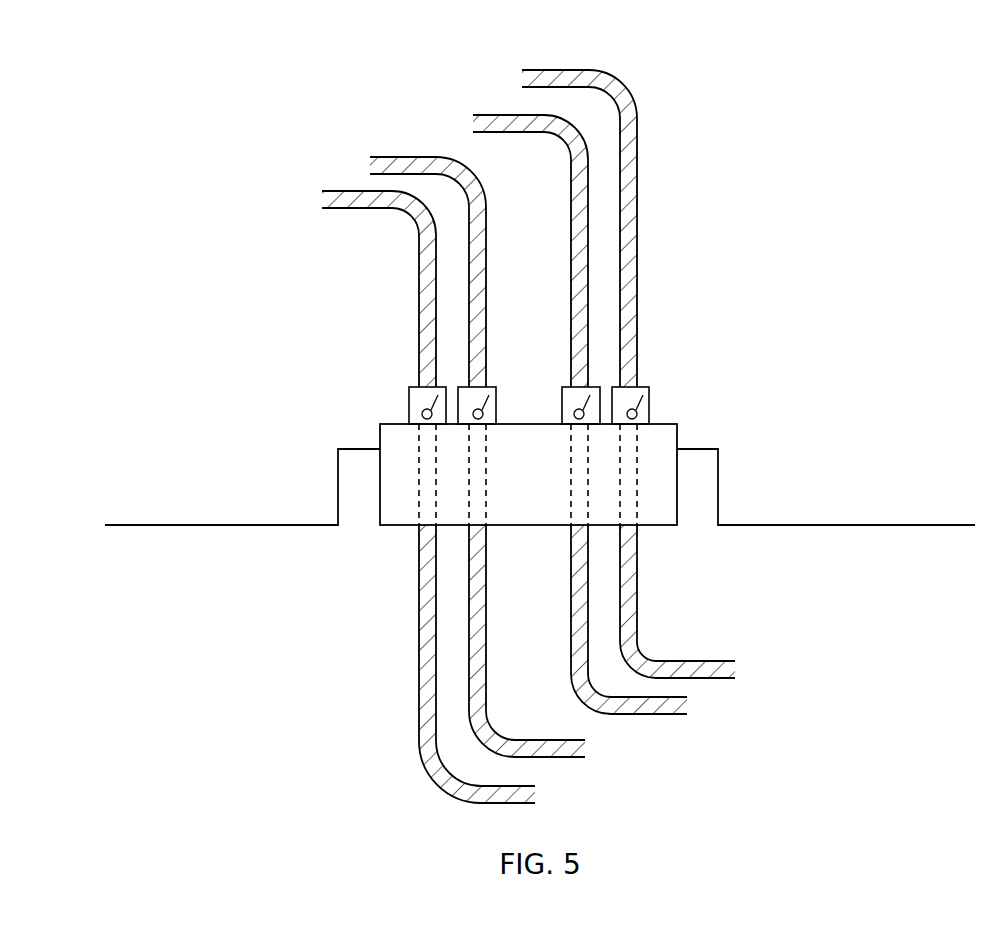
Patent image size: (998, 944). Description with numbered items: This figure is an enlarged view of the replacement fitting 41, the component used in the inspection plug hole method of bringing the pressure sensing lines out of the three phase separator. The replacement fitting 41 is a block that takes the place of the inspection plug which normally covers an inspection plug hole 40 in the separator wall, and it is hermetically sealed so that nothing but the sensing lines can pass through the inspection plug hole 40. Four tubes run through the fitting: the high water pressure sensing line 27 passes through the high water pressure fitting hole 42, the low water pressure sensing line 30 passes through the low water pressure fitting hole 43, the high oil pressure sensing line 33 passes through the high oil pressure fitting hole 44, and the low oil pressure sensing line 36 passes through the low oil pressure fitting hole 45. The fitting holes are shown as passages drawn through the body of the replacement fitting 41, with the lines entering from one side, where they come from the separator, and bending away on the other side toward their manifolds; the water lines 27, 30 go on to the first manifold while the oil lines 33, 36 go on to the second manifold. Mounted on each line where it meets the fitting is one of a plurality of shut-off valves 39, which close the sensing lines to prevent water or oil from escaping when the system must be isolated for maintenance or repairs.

The high water pressure sensing line 27 is at (508, 122).
The low water pressure sensing line 30 is at (593, 82).
The high oil pressure sensing line 33 is at (363, 195).
The low oil pressure sensing line 36 is at (407, 157).
The shut-off valves 39 is at (408, 387).
The inspection plug hole 40 is at (540, 492).
The replacement fitting 41 is at (393, 438).
The high water pressure fitting hole 42 is at (583, 470).
The low water pressure fitting hole 43 is at (628, 493).
The high oil pressure fitting hole 44 is at (428, 515).
The low oil pressure fitting hole 45 is at (492, 455).